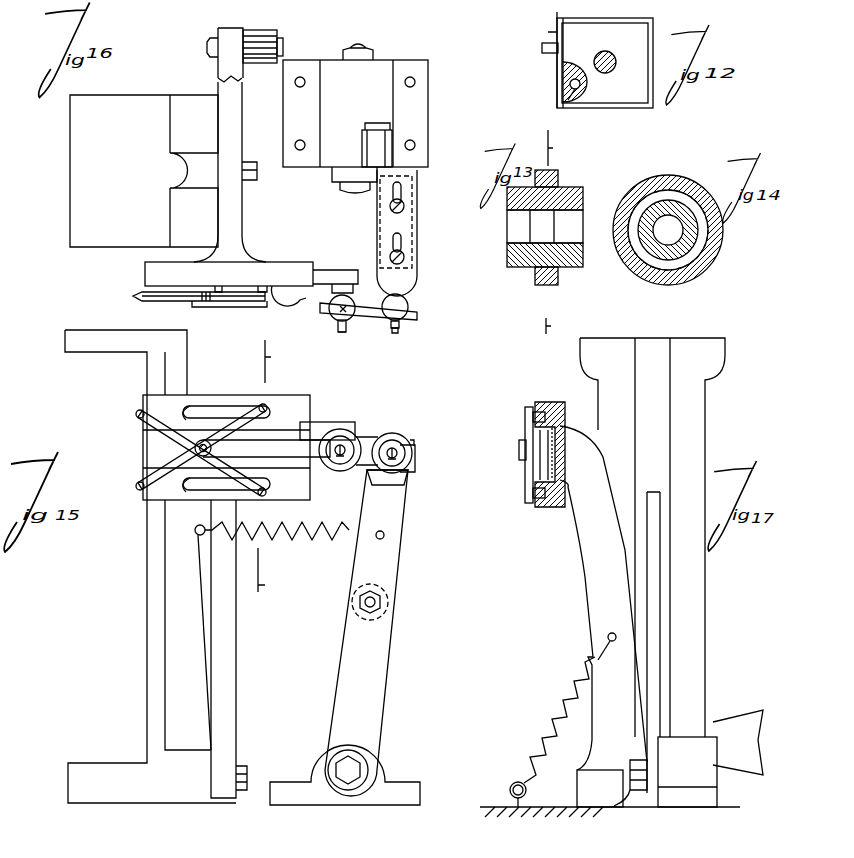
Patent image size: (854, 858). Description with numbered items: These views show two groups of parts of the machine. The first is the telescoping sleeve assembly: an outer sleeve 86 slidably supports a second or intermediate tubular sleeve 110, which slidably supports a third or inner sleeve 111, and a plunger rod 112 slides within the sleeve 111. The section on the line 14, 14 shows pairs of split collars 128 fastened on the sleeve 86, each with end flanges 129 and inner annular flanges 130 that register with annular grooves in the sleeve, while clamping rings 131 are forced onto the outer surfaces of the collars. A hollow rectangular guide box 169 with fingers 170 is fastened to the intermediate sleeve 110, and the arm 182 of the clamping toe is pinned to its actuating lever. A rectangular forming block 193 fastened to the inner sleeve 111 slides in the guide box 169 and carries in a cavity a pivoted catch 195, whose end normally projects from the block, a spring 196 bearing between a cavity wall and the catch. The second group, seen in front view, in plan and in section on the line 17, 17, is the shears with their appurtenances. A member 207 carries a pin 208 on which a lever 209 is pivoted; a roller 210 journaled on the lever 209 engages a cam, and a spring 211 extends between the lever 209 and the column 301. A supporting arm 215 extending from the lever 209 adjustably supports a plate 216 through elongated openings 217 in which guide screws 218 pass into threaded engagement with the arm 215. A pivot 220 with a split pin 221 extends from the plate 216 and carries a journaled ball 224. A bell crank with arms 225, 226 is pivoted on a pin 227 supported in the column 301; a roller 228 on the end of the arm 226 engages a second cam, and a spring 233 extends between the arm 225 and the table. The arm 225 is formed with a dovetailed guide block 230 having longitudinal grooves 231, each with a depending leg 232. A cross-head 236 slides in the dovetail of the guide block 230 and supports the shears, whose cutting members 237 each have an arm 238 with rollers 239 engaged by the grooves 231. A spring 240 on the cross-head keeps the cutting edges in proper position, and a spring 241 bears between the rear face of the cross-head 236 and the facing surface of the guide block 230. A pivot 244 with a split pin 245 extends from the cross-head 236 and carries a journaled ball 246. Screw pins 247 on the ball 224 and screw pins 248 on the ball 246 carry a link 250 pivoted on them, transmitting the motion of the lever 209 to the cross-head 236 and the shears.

In FIG. 13, the section line 14 is at (558, 231).
In FIG. 15, the section line 17 is at (273, 466).
In FIG. 13, the outer sleeve 86 is at (508, 258).
In FIG. 14, the outer sleeve 86 is at (630, 210).
In FIG. 13, the intermediate tubular sleeve 110 is at (579, 258).
In FIG. 14, the intermediate tubular sleeve 110 is at (717, 260).
In FIG. 12, the inner sleeve 111 is at (609, 53).
In FIG. 13, the inner sleeve 111 is at (549, 210).
In FIG. 14, the inner sleeve 111 is at (692, 229).
In FIG. 12, the plunger rod 112 is at (612, 66).
In FIG. 13, the split collars 128 is at (535, 276).
In FIG. 14, the split collars 128 is at (640, 196).
In FIG. 13, the end flanges 129 is at (553, 182).
In FIG. 13, the inner annular flanges 130 is at (540, 211).
In FIG. 13, the clamping rings 131 is at (542, 288).
In FIG. 14, the clamping rings 131 is at (675, 176).
In FIG. 12, the guide box 169 is at (615, 109).
In FIG. 12, the fingers 170 is at (557, 32).
In FIG. 12, the arm of the clamping toe 182 is at (542, 49).
In FIG. 12, the forming block 193 is at (581, 67).
In FIG. 12, the catch 195 is at (570, 83).
In FIG. 12, the spring 196 is at (566, 96).
In FIG. 16, the bearing block 207 is at (428, 95).
In FIG. 15, the bearing block 207 is at (386, 772).
In FIG. 17, the bearing block 207 is at (688, 803).
In FIG. 16, the pin 208 is at (358, 46).
In FIG. 15, the pin 208 is at (352, 768).
In FIG. 17, the pin 208 is at (626, 800).
In FIG. 16, the lever 209 is at (340, 186).
In FIG. 15, the lever 209 is at (378, 662).
In FIG. 17, the lever 209 is at (663, 621).
In FIG. 16, the roller 210 is at (392, 152).
In FIG. 15, the roller 210 is at (388, 604).
In FIG. 15, the spring 211 is at (285, 534).
In FIG. 16, the supporting arm 215 is at (417, 217).
In FIG. 15, the supporting arm 215 is at (408, 485).
In FIG. 16, the plate 216 is at (417, 244).
In FIG. 15, the plate 216 is at (378, 438).
In FIG. 16, the elongated openings 217 is at (402, 192).
In FIG. 16, the guide screws 218 is at (390, 206).
In FIG. 16, the pivot 220 is at (399, 334).
In FIG. 15, the pivot 220 is at (413, 452).
In FIG. 16, the split pin 221 is at (405, 325).
In FIG. 15, the split pin 221 is at (412, 440).
In FIG. 16, the ball 224 is at (402, 301).
In FIG. 15, the ball 224 is at (412, 460).
In FIG. 16, the arm of bell crank 225 is at (243, 225).
In FIG. 15, the arm of bell crank 225 is at (236, 656).
In FIG. 17, the arm of bell crank 225 is at (607, 613).
In FIG. 16, the arm of bell crank 226 is at (243, 120).
In FIG. 17, the arm of bell crank 226 is at (738, 722).
In FIG. 16, the pin 227 is at (262, 159).
In FIG. 15, the pin 227 is at (247, 767).
In FIG. 16, the roller 228 is at (283, 44).
In FIG. 16, the dovetailed guide block 230 is at (273, 266).
In FIG. 15, the dovetailed guide block 230 is at (300, 404).
In FIG. 17, the dovetailed guide block 230 is at (565, 396).
In FIG. 15, the longitudinal grooves 231 is at (233, 406).
In FIG. 15, the depending leg 232 is at (190, 405).
In FIG. 17, the spring 233 is at (567, 705).
In FIG. 16, the cross-head 236 is at (328, 270).
In FIG. 15, the cross-head 236 is at (339, 428).
In FIG. 17, the cross-head 236 is at (544, 466).
In FIG. 16, the cutting members 237 is at (133, 296).
In FIG. 15, the cutting members 237 is at (141, 413).
In FIG. 16, the arm 238 is at (238, 300).
In FIG. 15, the arm 238 is at (263, 412).
In FIG. 17, the arm 238 is at (527, 425).
In FIG. 16, the rollers 239 is at (262, 290).
In FIG. 17, the rollers 239 is at (536, 410).
In FIG. 16, the spring 240 is at (262, 307).
In FIG. 15, the spring 240 is at (262, 449).
In FIG. 17, the spring 240 is at (520, 448).
In FIG. 17, the spring 241 is at (556, 456).
In FIG. 16, the pivot 244 is at (338, 328).
In FIG. 15, the pivot 244 is at (359, 453).
In FIG. 16, the split pin 245 is at (347, 326).
In FIG. 16, the ball 246 is at (332, 315).
In FIG. 15, the ball 246 is at (338, 468).
In FIG. 16, the screw pins 247 is at (420, 313).
In FIG. 15, the screw pins 247 is at (395, 434).
In FIG. 16, the screw pins 248 is at (346, 308).
In FIG. 15, the screw pins 248 is at (344, 470).
In FIG. 16, the link 250 is at (380, 325).
In FIG. 15, the link 250 is at (370, 437).
In FIG. 16, the column 301 is at (70, 150).
In FIG. 15, the column 301 is at (147, 655).
In FIG. 17, the column 301 is at (706, 407).